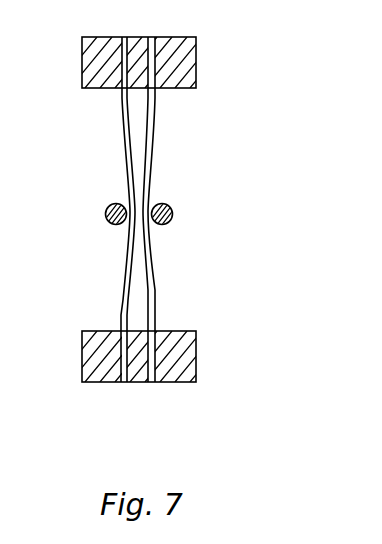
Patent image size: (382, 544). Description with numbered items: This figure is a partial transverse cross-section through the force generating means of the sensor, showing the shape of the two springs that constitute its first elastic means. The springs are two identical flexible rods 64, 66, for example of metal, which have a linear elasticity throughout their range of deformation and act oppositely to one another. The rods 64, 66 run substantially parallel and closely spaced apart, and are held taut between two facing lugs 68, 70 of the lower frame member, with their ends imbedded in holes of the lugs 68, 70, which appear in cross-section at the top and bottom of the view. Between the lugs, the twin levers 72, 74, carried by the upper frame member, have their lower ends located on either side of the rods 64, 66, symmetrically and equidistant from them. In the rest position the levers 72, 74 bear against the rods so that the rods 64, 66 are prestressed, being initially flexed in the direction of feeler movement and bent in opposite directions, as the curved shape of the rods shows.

The flexible rod 64 is at (128, 145).
The flexible rod 66 is at (152, 144).
The lug 68 is at (182, 62).
The lug 70 is at (182, 362).
The lever 72 is at (105, 214).
The lever 74 is at (173, 215).